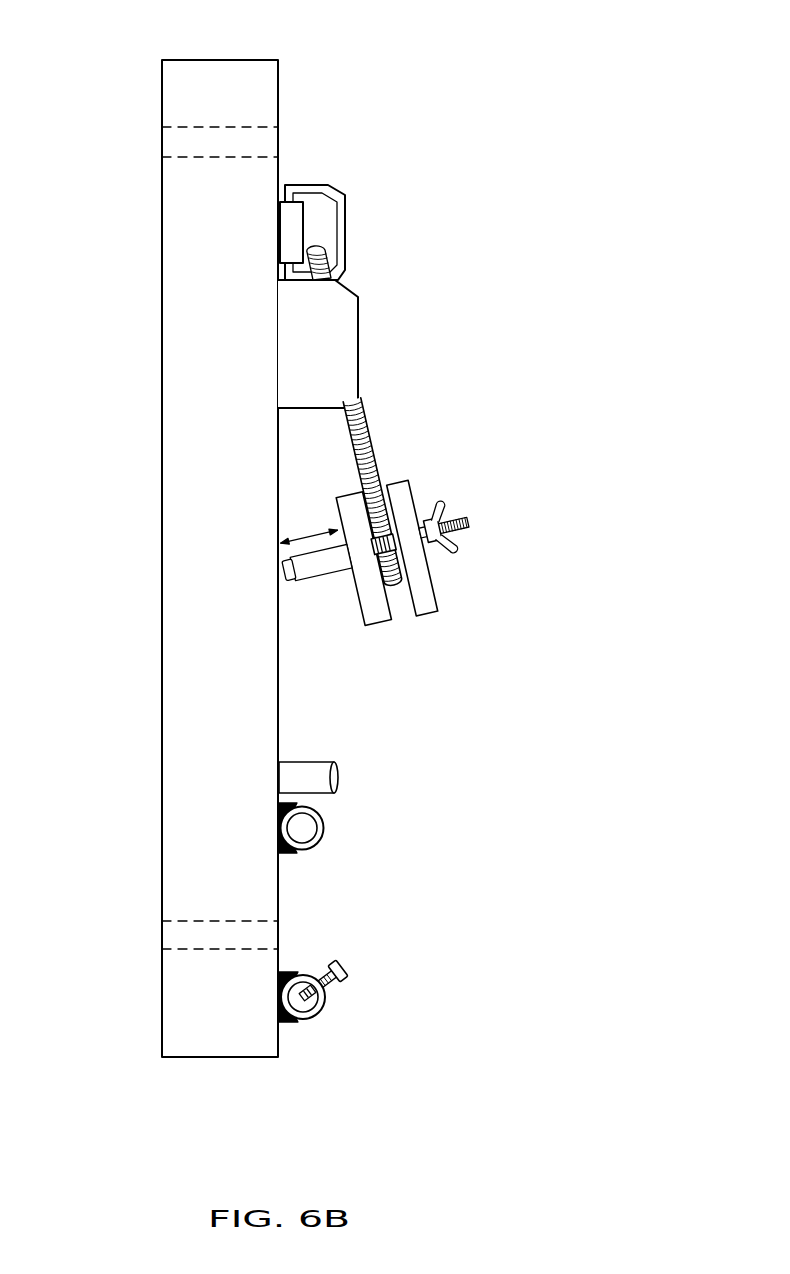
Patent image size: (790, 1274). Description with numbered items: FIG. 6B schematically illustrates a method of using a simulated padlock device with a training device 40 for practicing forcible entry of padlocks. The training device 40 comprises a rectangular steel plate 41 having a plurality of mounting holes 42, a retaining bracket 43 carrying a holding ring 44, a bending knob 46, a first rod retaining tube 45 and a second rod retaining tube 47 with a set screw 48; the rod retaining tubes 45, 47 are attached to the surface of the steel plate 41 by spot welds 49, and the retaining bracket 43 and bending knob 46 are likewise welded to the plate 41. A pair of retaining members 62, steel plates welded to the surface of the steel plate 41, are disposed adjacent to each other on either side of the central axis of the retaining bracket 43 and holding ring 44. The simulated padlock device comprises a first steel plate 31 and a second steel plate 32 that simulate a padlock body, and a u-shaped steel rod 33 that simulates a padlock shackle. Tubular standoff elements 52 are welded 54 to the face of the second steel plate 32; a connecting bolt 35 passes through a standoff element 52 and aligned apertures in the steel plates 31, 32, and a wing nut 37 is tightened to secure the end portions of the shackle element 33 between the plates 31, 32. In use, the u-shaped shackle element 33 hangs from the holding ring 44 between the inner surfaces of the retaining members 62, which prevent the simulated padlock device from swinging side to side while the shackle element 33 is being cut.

The training device 40 is at (622, 85).
The rectangular steel plate 41 is at (258, 100).
The mounting holes 42 is at (200, 137).
The retaining bracket 43 is at (292, 228).
The holding ring 44 is at (348, 232).
The retaining members 62 is at (358, 333).
The u-shaped steel rod 33 is at (360, 395).
The second steel plate 32 is at (340, 502).
The first steel plate 31 is at (395, 495).
The tubular standoff elements 52 is at (317, 568).
The weld 54 is at (348, 572).
The connecting bolt 35 is at (290, 584).
The wing nut 37 is at (460, 550).
The bending knob 46 is at (300, 777).
The first rod retaining tube 45 is at (307, 828).
The spot welds 49 is at (288, 852).
The set screw 48 is at (347, 963).
The second rod retaining tube 47 is at (328, 998).